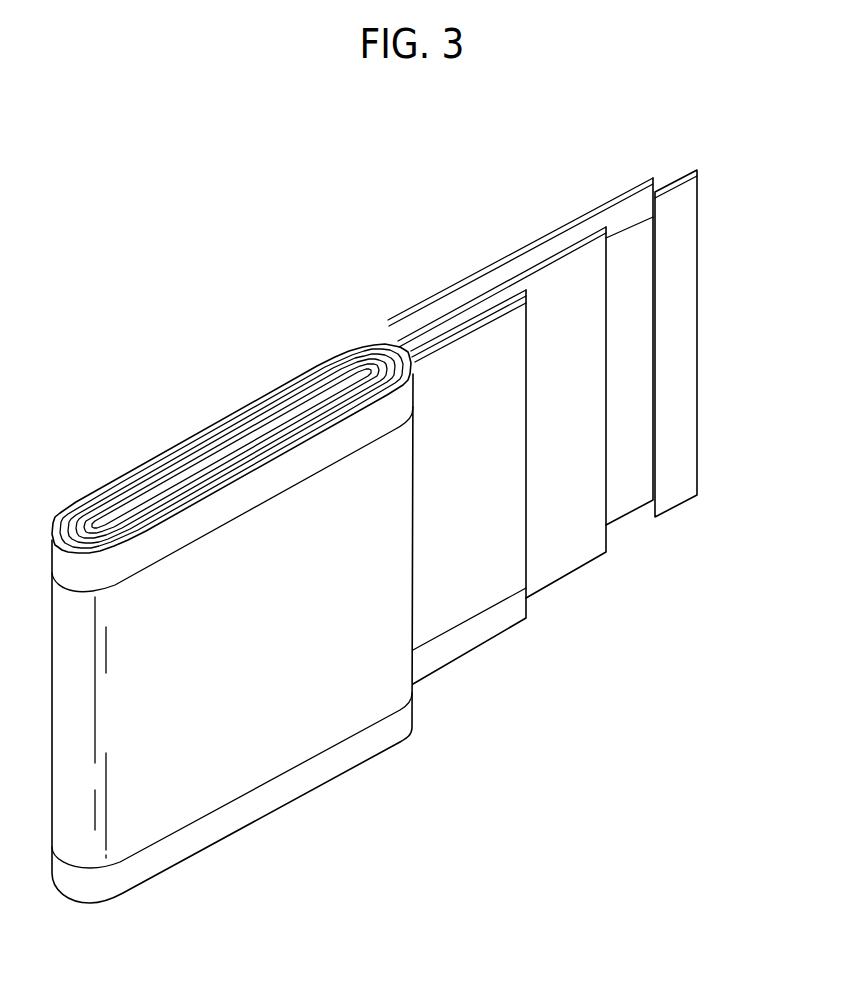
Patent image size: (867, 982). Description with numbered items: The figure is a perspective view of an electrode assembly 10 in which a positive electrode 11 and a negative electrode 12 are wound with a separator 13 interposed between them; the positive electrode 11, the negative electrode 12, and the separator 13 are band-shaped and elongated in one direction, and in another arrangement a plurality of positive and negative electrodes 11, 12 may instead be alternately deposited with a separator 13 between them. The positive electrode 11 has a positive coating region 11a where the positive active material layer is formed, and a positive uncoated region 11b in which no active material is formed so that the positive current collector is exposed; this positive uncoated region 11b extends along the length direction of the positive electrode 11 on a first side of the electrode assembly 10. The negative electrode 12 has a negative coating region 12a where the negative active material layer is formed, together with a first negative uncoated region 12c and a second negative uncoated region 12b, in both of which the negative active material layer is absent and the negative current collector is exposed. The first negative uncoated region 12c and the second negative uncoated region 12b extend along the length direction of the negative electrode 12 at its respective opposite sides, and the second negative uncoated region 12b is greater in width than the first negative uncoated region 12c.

The electrode assembly 10 is at (243, 388).
The positive electrode 11 is at (582, 325).
The positive coating region 11a is at (635, 378).
The positive uncoated region 11b is at (631, 207).
The negative electrode 12 is at (516, 456).
The negative coating region 12a is at (497, 563).
The second negative uncoated region 12b is at (447, 650).
The first negative uncoated region 12c is at (489, 320).
The separator 13 is at (676, 495).